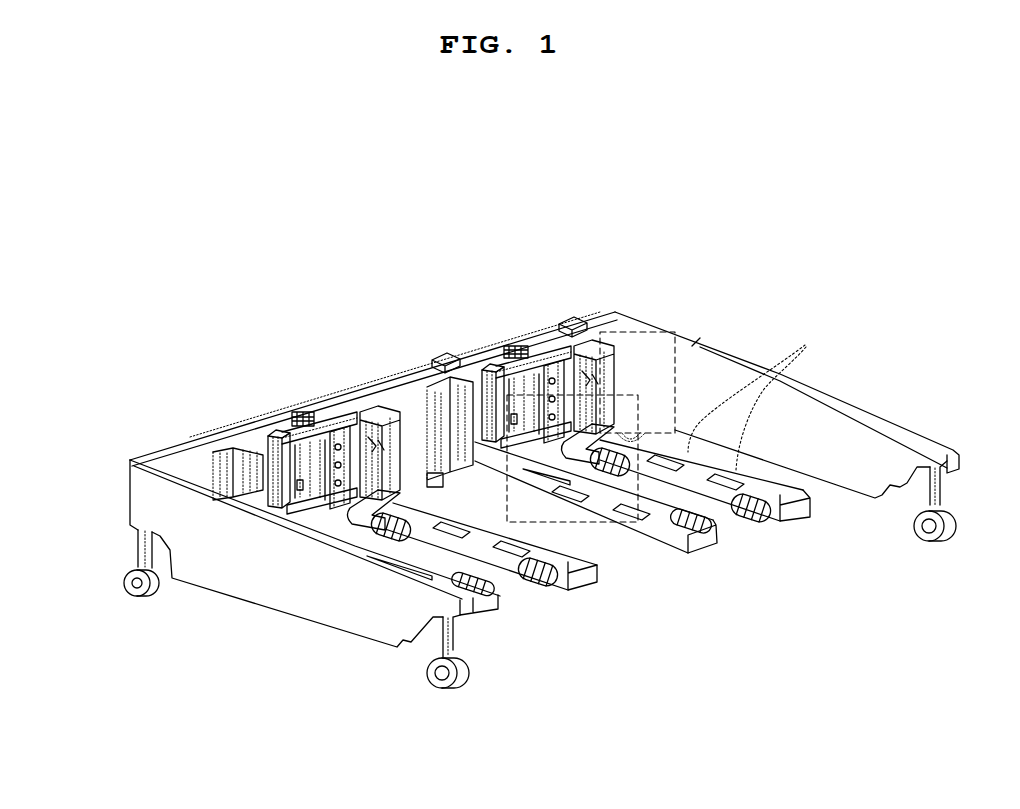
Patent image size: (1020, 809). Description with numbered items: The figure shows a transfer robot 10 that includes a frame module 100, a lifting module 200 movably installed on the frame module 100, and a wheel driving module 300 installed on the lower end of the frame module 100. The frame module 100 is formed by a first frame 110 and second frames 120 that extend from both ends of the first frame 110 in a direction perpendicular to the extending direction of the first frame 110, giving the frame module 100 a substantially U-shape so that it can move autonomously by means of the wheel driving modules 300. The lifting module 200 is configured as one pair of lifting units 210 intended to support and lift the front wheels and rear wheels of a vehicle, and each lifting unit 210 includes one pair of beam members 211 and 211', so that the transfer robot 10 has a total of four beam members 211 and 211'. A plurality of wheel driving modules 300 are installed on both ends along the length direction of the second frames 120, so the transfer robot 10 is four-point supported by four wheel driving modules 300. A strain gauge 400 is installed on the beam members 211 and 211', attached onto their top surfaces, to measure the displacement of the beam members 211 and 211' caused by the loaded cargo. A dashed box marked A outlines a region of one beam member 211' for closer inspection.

The transfer robot 10 is at (380, 337).
The frame module 100 is at (557, 252).
The first frame 110 is at (541, 338).
The second frame 120 is at (724, 345).
The lifting module 200 is at (850, 617).
The lifting unit 210 is at (773, 600).
The beam member 211 is at (458, 553).
The beam member 211' is at (607, 537).
The wheel driving module 300 is at (112, 597).
The strain gauge 400 is at (755, 393).
The detail region A is at (557, 521).